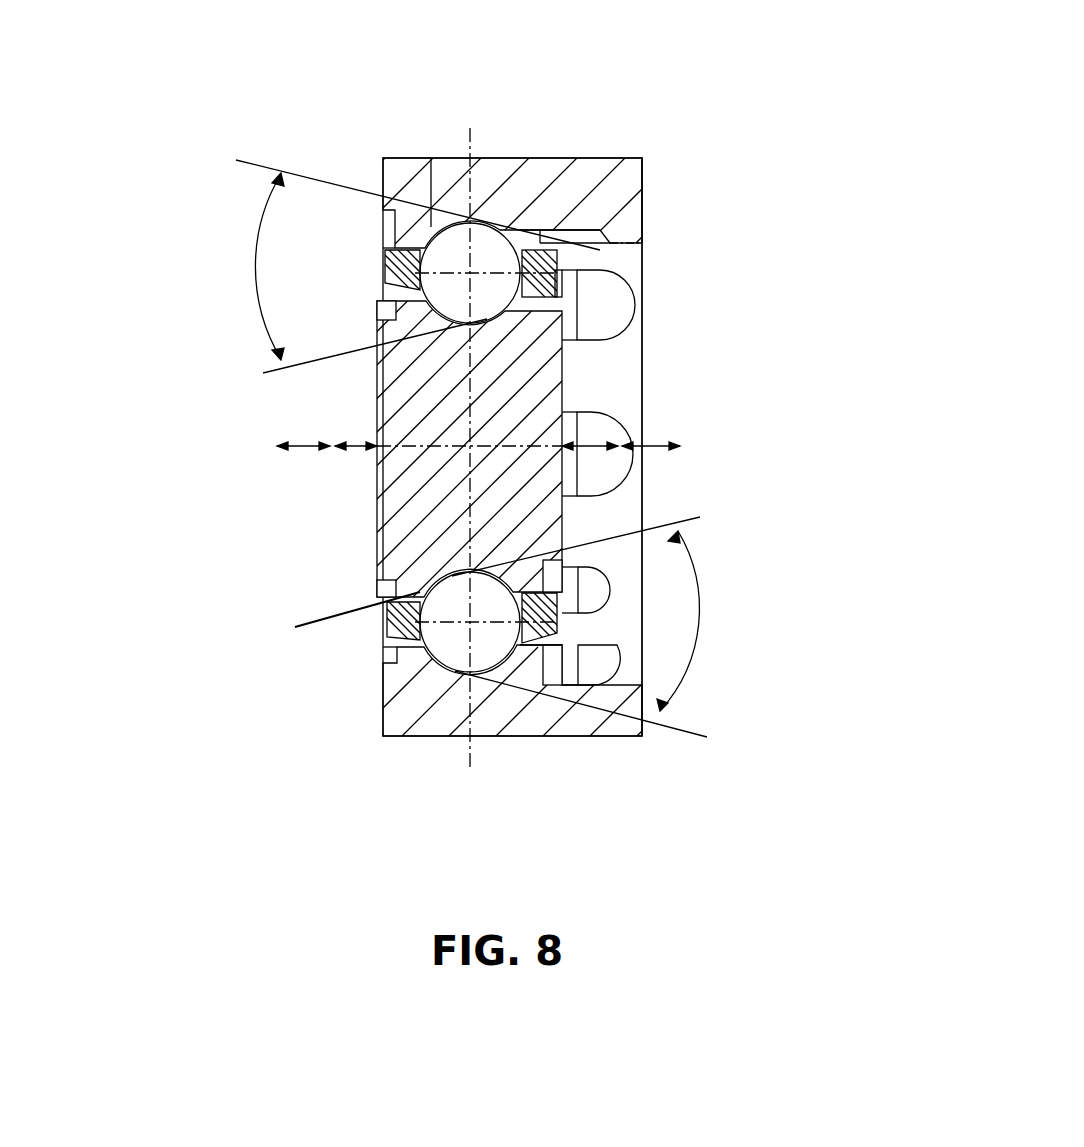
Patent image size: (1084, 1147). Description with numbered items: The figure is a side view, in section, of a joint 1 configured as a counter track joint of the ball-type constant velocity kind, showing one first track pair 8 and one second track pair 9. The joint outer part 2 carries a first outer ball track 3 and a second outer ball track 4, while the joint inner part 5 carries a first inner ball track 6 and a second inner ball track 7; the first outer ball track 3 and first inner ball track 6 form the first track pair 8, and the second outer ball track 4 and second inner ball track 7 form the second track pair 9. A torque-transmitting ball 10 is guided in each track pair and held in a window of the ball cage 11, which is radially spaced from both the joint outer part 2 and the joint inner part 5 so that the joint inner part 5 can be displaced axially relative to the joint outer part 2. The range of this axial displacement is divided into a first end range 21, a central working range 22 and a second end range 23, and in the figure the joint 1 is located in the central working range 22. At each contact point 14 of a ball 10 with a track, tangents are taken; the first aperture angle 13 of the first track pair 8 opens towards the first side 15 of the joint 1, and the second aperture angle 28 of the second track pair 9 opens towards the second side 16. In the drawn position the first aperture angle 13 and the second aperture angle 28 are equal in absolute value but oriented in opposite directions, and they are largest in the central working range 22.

The joint 1 is at (600, 150).
The joint outer part 2 is at (581, 718).
The first outer ball track 3 is at (572, 237).
The second outer ball track 4 is at (420, 657).
The joint inner part 5 is at (407, 527).
The first inner ball track 6 is at (537, 306).
The second inner ball track 7 is at (295, 627).
The first track pair 8 is at (428, 156).
The second track pair 9 is at (608, 658).
The ball 10 is at (487, 252).
The ball cage 11 is at (534, 262).
The first aperture angle 13 is at (392, 266).
The contact point 14 is at (474, 226).
The first side 15 is at (376, 563).
The second side 16 is at (642, 505).
The first end range 21 is at (300, 448).
The central working range 22 is at (348, 444).
The second end range 23 is at (680, 443).
The second aperture angle 28 is at (597, 627).